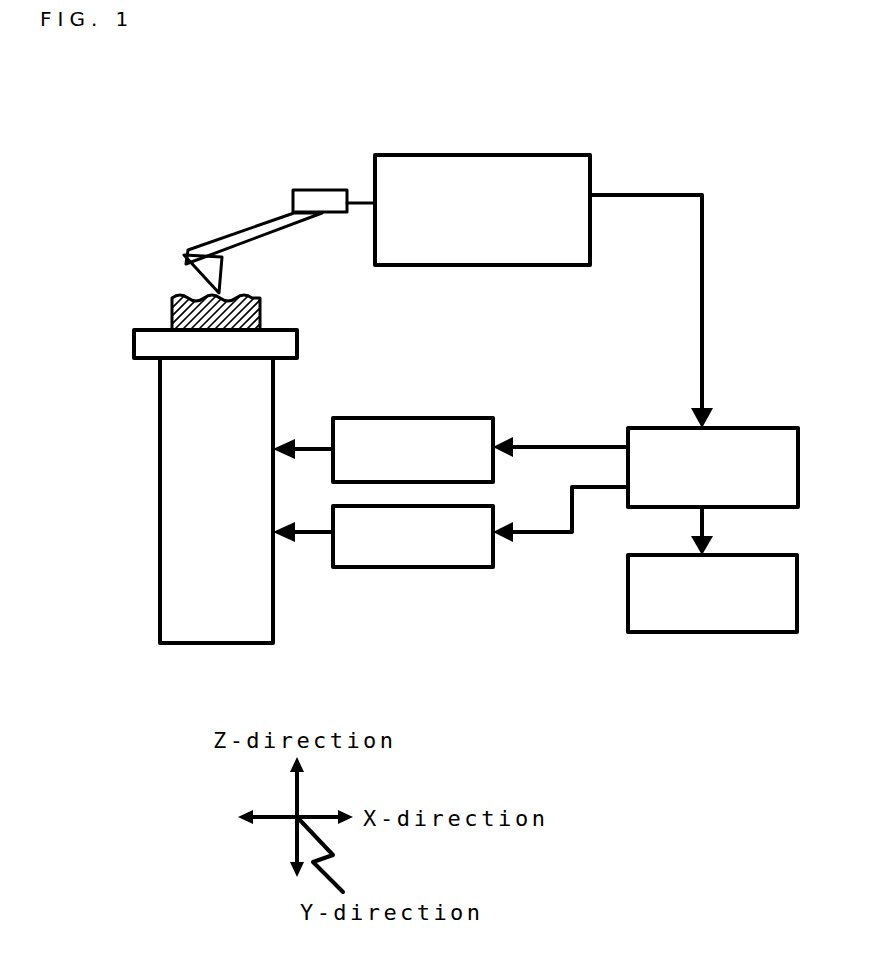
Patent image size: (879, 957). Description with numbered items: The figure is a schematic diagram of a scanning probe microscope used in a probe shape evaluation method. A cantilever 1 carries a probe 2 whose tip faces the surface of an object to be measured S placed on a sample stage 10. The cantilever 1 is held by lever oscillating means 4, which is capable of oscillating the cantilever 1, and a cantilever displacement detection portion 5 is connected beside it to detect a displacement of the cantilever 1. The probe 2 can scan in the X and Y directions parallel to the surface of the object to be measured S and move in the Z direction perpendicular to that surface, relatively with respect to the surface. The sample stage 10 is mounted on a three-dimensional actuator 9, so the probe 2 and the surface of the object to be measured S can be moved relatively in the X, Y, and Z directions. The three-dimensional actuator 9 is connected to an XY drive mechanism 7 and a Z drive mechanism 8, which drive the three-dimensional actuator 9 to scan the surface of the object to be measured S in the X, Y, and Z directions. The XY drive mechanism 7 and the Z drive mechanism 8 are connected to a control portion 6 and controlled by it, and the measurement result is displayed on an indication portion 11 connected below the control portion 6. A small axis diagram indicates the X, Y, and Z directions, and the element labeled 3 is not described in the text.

The cantilever 1 is at (288, 248).
The probe 2 is at (200, 253).
The cantilever 3 is at (252, 233).
The lever oscillating means 4 is at (302, 200).
The cantilever displacement detection portion 5 is at (478, 160).
The control portion 6 is at (667, 497).
The XY drive mechanism 7 is at (345, 427).
The Z drive mechanism 8 is at (438, 567).
The three-dimensional actuator 9 is at (170, 465).
The sample stage 10 is at (145, 340).
The indication portion 11 is at (638, 573).
The object to be measured S is at (177, 306).